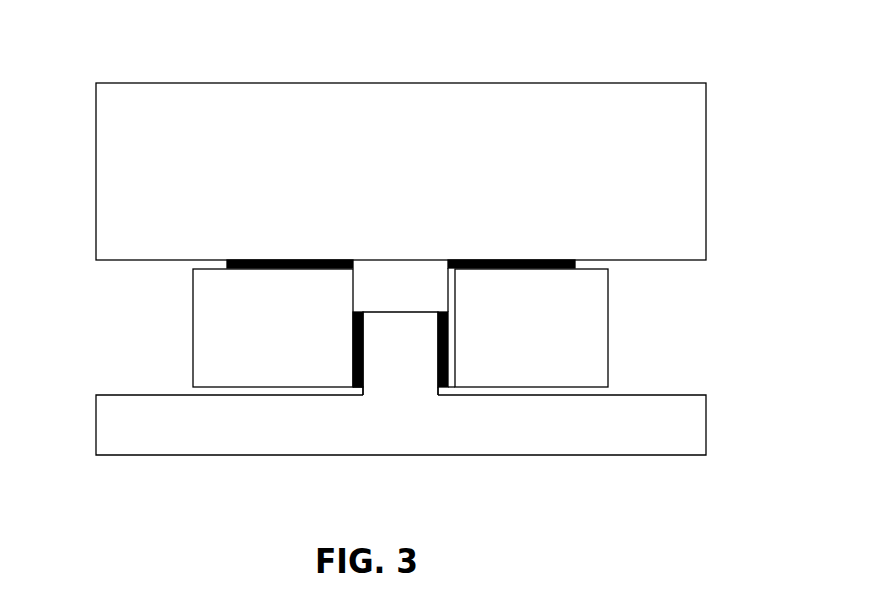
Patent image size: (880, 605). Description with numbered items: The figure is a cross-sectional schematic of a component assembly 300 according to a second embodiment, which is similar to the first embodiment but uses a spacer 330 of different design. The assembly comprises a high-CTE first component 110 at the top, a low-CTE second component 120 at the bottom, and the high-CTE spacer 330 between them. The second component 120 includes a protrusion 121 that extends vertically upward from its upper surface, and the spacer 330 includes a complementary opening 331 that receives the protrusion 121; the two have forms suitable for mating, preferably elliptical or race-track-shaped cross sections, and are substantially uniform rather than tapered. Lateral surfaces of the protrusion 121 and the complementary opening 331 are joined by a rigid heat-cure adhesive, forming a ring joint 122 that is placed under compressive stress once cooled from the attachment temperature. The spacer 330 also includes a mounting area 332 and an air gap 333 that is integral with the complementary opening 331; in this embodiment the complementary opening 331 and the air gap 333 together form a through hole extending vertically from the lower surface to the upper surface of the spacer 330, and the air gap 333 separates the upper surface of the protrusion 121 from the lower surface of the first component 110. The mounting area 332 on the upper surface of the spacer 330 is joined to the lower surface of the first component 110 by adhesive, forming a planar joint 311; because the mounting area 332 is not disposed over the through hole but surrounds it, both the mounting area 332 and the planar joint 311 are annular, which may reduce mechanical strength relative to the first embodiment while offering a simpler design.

The component assembly 300 is at (108, 61).
The first component 110 is at (96, 172).
The second component 120 is at (96, 427).
The protrusion 121 is at (400, 353).
The ring joint 122 is at (357, 391).
The spacer 330 is at (193, 330).
The complementary opening 331 is at (457, 350).
The mounting area 332 is at (291, 271).
The air gap 333 is at (457, 292).
The planar joint 311 is at (577, 262).